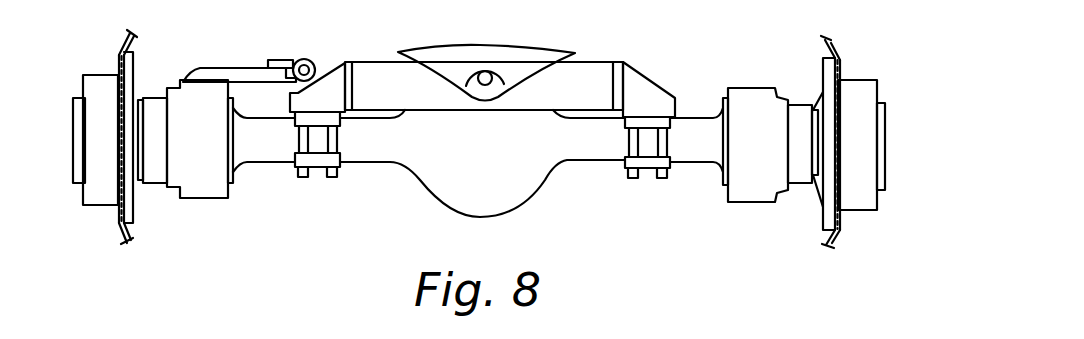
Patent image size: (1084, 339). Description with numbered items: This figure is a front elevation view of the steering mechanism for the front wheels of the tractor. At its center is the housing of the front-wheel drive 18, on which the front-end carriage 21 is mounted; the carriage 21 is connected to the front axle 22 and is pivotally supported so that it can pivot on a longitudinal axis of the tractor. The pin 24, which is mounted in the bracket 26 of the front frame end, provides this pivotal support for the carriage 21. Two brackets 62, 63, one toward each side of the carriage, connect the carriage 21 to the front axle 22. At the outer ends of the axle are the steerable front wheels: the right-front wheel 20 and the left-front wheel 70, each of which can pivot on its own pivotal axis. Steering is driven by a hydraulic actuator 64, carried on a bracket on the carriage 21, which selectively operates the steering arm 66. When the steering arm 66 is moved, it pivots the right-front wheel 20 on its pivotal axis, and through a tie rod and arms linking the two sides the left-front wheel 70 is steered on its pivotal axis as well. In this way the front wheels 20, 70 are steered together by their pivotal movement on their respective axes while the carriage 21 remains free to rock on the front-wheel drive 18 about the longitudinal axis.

The front-wheel drive 18 is at (438, 193).
The right-front wheel 20 is at (128, 38).
The front-end carriage 21 is at (626, 47).
The front axle 22 is at (597, 157).
The pin 24 is at (484, 74).
The bracket 26 is at (523, 53).
The bracket 62 is at (333, 72).
The bracket 63 is at (653, 86).
The hydraulic actuator 64 is at (306, 58).
The steering arm 66 is at (238, 65).
The left-front wheel 70 is at (837, 45).